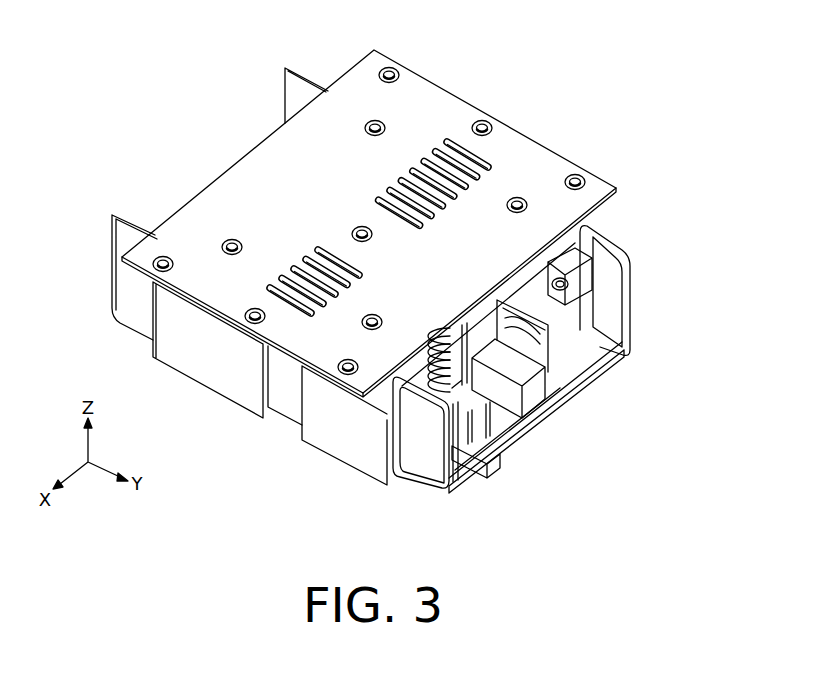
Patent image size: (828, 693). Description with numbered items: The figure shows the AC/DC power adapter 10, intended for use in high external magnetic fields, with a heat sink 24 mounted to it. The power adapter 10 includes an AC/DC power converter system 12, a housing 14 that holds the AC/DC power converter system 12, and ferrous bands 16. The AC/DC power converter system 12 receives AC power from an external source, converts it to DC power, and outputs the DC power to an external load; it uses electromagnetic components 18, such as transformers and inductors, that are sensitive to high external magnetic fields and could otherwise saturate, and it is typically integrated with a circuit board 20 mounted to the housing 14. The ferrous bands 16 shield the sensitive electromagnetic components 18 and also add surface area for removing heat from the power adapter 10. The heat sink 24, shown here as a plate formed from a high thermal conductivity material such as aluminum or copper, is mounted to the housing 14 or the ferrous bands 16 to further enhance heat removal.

The AC/DC power adapter 10 is at (611, 92).
The AC/DC power converter system 12 is at (547, 372).
The housing 14 is at (287, 68).
The ferrous bands 16 is at (202, 367).
The electromagnetic components 18 is at (488, 402).
The circuit board 20 is at (600, 348).
The heat sink 24 is at (238, 182).